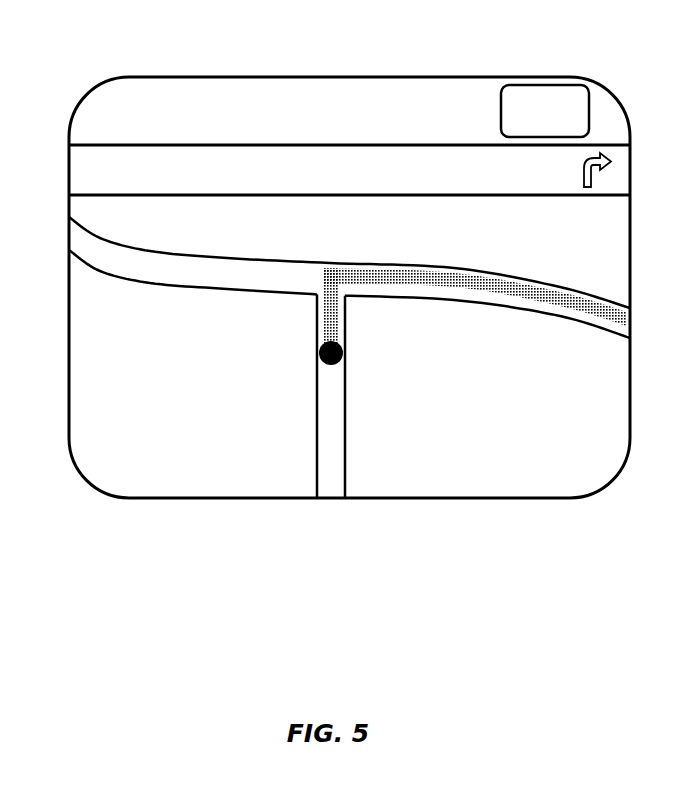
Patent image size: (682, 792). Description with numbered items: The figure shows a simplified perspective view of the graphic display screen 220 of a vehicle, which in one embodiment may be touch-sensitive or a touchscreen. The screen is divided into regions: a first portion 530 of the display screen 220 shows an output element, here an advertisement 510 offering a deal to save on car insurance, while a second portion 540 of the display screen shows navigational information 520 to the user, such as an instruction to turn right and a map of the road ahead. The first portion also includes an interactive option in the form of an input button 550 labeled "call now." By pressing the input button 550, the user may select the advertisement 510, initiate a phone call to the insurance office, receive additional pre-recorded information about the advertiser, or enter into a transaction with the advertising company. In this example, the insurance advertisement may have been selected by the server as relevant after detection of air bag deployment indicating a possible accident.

The graphic display screen 220 is at (452, 77).
The advertisement 510 is at (92, 110).
The navigational information 520 is at (80, 182).
The first portion 530 is at (289, 87).
The second portion 540 is at (83, 400).
The input button 550 is at (589, 108).